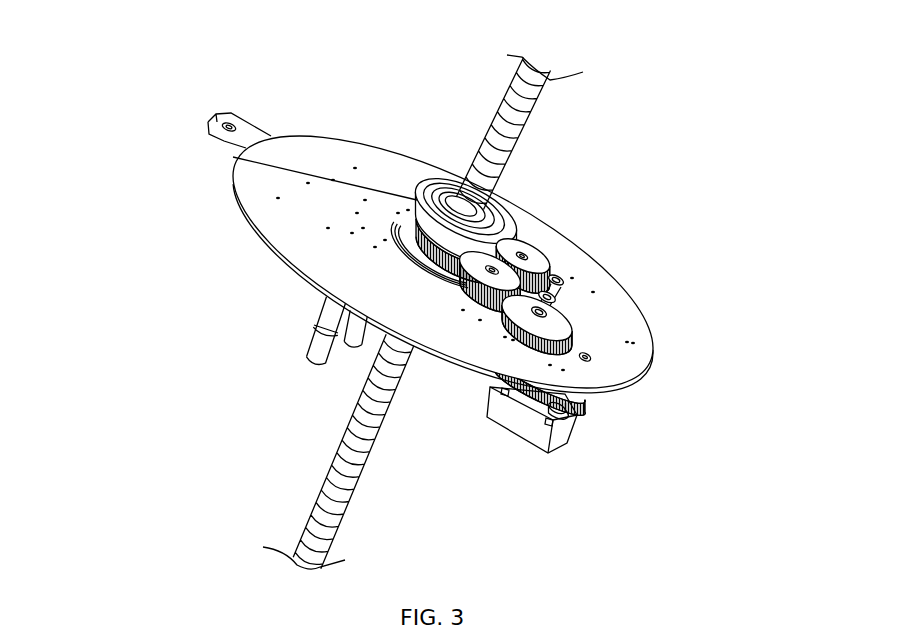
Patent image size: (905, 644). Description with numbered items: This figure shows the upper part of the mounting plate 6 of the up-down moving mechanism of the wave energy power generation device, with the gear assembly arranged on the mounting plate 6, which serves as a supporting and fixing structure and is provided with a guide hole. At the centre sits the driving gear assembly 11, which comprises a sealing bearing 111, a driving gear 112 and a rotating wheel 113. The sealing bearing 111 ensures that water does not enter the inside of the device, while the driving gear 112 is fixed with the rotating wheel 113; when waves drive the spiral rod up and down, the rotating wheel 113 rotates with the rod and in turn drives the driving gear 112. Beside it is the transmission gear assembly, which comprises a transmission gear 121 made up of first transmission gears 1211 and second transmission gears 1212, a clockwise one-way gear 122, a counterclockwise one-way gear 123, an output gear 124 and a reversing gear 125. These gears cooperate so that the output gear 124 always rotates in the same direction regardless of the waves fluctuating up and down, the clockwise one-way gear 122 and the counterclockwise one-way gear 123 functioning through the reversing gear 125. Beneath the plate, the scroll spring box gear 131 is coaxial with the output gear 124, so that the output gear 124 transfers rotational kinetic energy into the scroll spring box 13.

The mounting plate 6 is at (308, 143).
The driving gear assembly 11 is at (98, 267).
The sealing bearing 111 is at (209, 134).
The driving gear 112 is at (420, 234).
The rotating wheel 113 is at (420, 255).
The transmission gear 121 is at (675, 270).
The first transmission gear 1211 is at (548, 287).
The second transmission gear 1212 is at (526, 259).
The clockwise one-way gear 122 is at (463, 300).
The counterclockwise one-way gear 123 is at (548, 305).
The output gear 124 is at (495, 328).
The reversing gear 125 is at (552, 300).
The scroll spring box 13 is at (506, 433).
The scroll spring box gear 131 is at (511, 395).